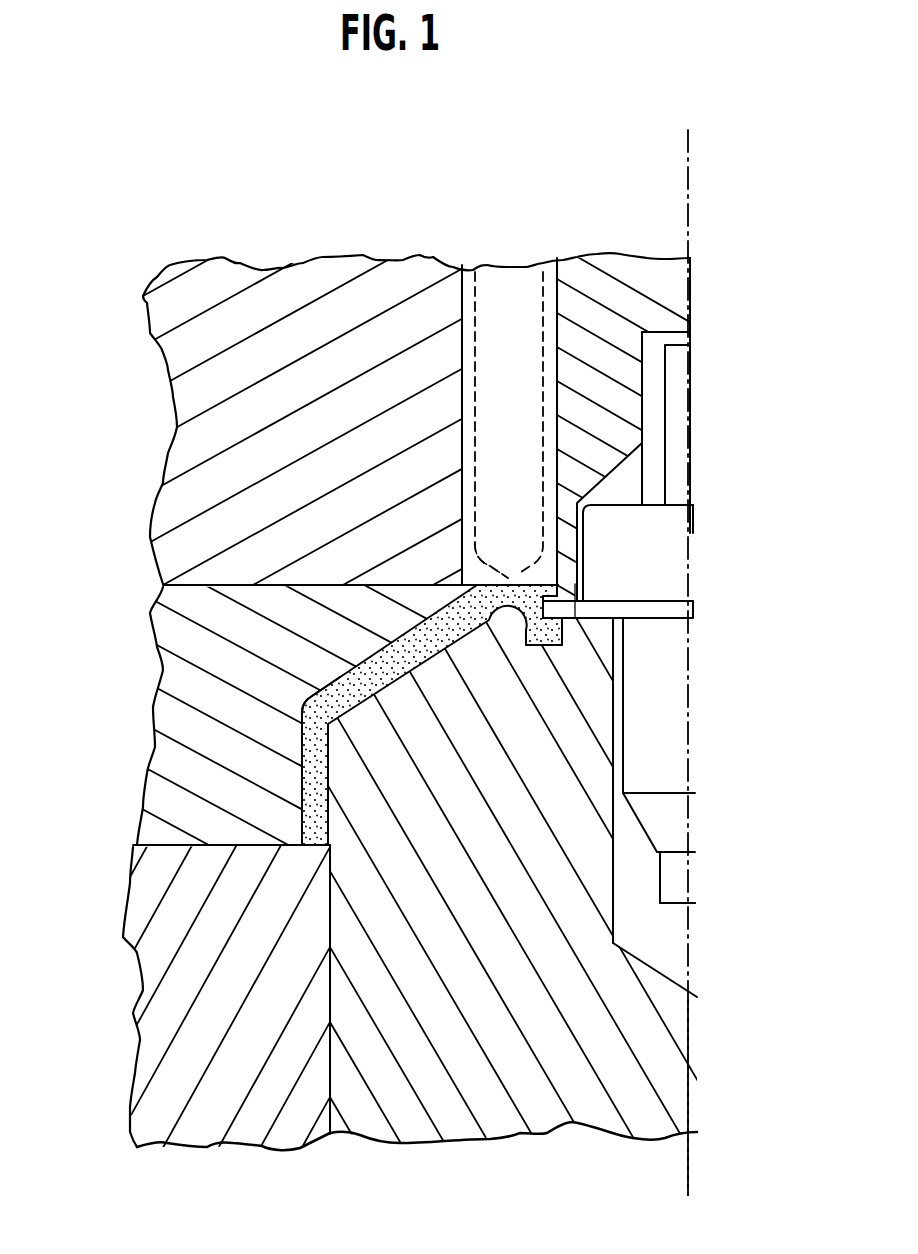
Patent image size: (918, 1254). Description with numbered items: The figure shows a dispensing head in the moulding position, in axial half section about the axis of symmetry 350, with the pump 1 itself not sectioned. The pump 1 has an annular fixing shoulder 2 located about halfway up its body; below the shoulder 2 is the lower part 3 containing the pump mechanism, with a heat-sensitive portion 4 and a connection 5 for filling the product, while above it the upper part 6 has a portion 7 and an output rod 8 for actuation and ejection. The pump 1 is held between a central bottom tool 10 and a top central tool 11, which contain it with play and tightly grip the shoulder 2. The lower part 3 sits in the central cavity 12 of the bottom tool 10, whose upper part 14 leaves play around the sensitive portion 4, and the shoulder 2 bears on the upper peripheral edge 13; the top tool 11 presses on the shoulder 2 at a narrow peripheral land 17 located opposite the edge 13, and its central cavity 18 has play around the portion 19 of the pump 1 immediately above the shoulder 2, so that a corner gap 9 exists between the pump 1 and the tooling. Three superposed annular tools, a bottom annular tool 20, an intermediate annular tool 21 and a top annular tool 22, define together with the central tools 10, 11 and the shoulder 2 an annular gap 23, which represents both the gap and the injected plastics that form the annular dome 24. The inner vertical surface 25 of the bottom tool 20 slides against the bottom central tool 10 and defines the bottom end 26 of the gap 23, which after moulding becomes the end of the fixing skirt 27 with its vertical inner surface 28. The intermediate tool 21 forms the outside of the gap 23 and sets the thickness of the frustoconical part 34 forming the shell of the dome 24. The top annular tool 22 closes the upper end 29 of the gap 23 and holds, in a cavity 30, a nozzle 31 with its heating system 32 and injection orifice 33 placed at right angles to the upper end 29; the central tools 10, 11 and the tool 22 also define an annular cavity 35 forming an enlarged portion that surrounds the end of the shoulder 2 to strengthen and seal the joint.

The pump 1 is at (679, 553).
The annular fixing shoulder 2 is at (665, 614).
The lower part 3 is at (689, 796).
The portion 4 is at (657, 780).
The connection 5 is at (685, 873).
The upper part 6 is at (679, 553).
The portion 7 is at (668, 570).
The output rod 8 is at (680, 444).
The corner gap 9 is at (577, 593).
The central bottom tool 10 is at (690, 1078).
The top central tool 11 is at (613, 300).
The central cavity 12 is at (670, 942).
The upper peripheral edge 13 is at (613, 642).
The upper part of the central cavity 14 is at (613, 755).
The peripheral surface 17 is at (572, 622).
The central cavity 18 is at (655, 387).
The portion 19 is at (625, 523).
The bottom annular tool 20 is at (185, 968).
The intermediate annular tool 21 is at (187, 773).
The top annular tool 22 is at (240, 521).
The annular gap 23 is at (300, 713).
The annular dome 24 is at (189, 708).
The inner vertical surface 25 is at (330, 1050).
The bottom end 26 is at (313, 846).
The fixing skirt 27 is at (316, 775).
The vertical inner surface 28 is at (330, 812).
The upper end 29 is at (530, 583).
The cavity 30 is at (462, 482).
The nozzle 31 is at (496, 396).
The heating system 32 is at (503, 350).
The injection orifice 33 is at (510, 581).
The frustoconical part 34 is at (348, 657).
The annular cavity 35 is at (532, 654).
The axis of symmetry 350 is at (688, 165).